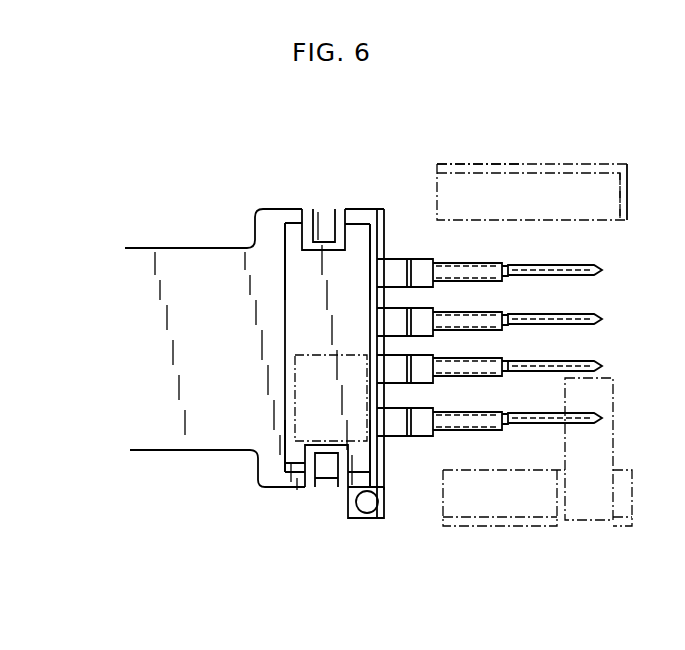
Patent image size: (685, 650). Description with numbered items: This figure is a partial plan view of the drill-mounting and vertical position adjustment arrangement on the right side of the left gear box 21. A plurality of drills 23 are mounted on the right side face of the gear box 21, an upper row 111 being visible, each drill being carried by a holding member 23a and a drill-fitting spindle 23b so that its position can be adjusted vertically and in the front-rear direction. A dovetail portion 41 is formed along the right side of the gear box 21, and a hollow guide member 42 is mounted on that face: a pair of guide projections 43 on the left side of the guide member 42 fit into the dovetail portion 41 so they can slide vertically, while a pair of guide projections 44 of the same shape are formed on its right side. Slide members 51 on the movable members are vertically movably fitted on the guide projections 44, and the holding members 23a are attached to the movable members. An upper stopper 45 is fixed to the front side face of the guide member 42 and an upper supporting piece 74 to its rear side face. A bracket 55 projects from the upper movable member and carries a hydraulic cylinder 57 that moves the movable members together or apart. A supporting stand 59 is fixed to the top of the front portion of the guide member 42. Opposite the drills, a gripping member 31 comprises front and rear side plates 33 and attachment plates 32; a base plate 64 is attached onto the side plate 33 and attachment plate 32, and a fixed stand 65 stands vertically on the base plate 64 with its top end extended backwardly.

The gear box 21 is at (193, 251).
The dovetail portion 41 is at (287, 215).
The hollow guide member 42 is at (285, 298).
The guide projections 43 is at (295, 243).
The guide projections 44 is at (358, 237).
The upper stopper 45 is at (328, 470).
The slide members 51 is at (357, 213).
The bracket 55 is at (382, 503).
The hydraulic cylinder 57 is at (367, 510).
The supporting stand 59 is at (300, 368).
The upper supporting piece 74 is at (323, 222).
The drills 23 is at (510, 332).
The holding member 23a is at (420, 262).
The drill-fitting spindle 23b is at (484, 316).
The upper row 111 is at (567, 263).
The gripping member 31 is at (552, 163).
The attachment plate 32 is at (623, 198).
The side plates 33 is at (495, 168).
The base plate 64 is at (623, 512).
The fixed stand 65 is at (598, 452).